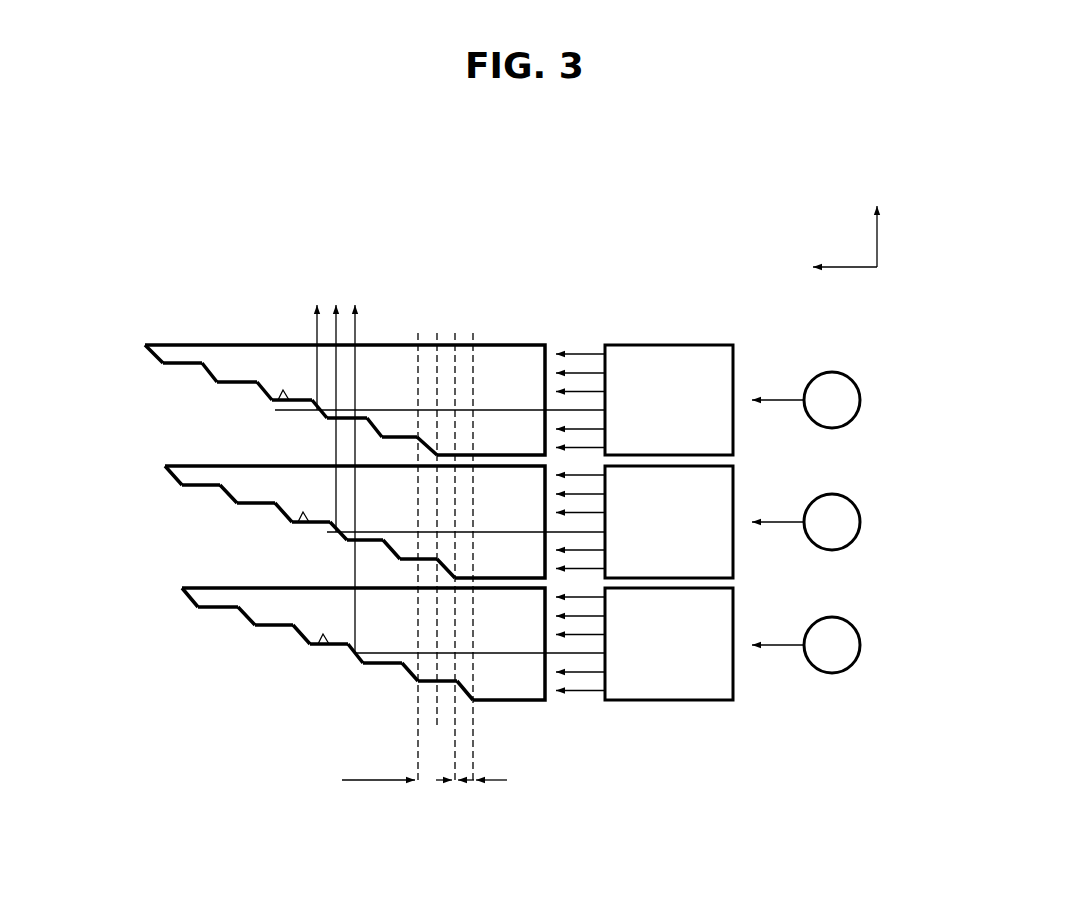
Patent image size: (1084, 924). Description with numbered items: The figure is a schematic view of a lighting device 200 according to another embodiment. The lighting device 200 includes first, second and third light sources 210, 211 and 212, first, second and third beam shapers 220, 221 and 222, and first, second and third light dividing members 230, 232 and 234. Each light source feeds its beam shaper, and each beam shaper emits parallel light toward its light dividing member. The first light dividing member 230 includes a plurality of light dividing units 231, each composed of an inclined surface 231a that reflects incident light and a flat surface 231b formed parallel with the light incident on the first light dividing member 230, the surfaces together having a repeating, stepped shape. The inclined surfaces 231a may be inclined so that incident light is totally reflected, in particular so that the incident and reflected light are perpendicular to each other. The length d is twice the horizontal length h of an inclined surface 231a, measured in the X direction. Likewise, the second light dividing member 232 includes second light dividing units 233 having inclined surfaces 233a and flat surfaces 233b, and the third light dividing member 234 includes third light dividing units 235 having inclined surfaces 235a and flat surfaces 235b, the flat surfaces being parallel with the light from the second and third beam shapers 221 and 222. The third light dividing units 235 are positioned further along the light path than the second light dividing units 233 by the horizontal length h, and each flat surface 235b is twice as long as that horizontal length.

The lighting device 200 is at (602, 276).
The first light source 210 is at (860, 645).
The second light source 211 is at (860, 522).
The third light source 212 is at (860, 400).
The first beam shaper 220 is at (728, 612).
The second beam shaper 221 is at (726, 486).
The third beam shaper 222 is at (728, 365).
The first light dividing member 230 is at (218, 600).
The light dividing unit 231 is at (336, 724).
The inclined surface 231a is at (300, 638).
The flat surface 231b is at (323, 638).
The second light dividing member 232 is at (200, 478).
The second light dividing unit 233 is at (214, 577).
The inclined surface 233a is at (280, 510).
The flat surface 233b is at (293, 524).
The third light dividing member 234 is at (170, 355).
The third light dividing unit 235 is at (196, 455).
The inclined surface 235a is at (262, 388).
The flat surface 235b is at (273, 402).